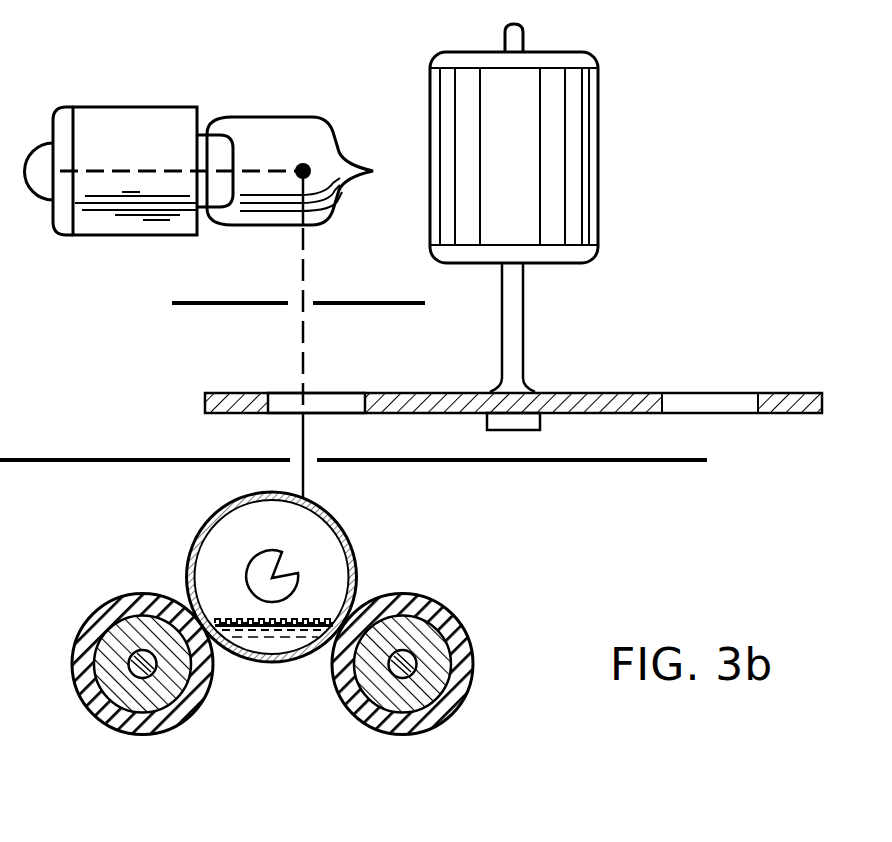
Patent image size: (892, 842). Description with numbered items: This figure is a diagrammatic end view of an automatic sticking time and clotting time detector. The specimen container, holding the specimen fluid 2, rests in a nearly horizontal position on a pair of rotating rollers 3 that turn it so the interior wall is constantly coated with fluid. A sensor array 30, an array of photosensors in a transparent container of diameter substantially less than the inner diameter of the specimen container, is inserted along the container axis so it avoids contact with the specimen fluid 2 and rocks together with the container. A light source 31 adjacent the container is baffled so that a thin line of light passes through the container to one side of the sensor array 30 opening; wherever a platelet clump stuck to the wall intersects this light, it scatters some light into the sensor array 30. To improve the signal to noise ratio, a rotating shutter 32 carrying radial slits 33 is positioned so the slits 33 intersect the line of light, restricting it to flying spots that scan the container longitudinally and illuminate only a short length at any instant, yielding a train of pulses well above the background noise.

The specimen fluid 2 is at (272, 633).
The rotating rollers 3 is at (92, 695).
The sensor array 30 is at (260, 568).
The light source 31 is at (231, 116).
The rotating shutter 32 is at (224, 396).
The radial slits 33 is at (332, 405).